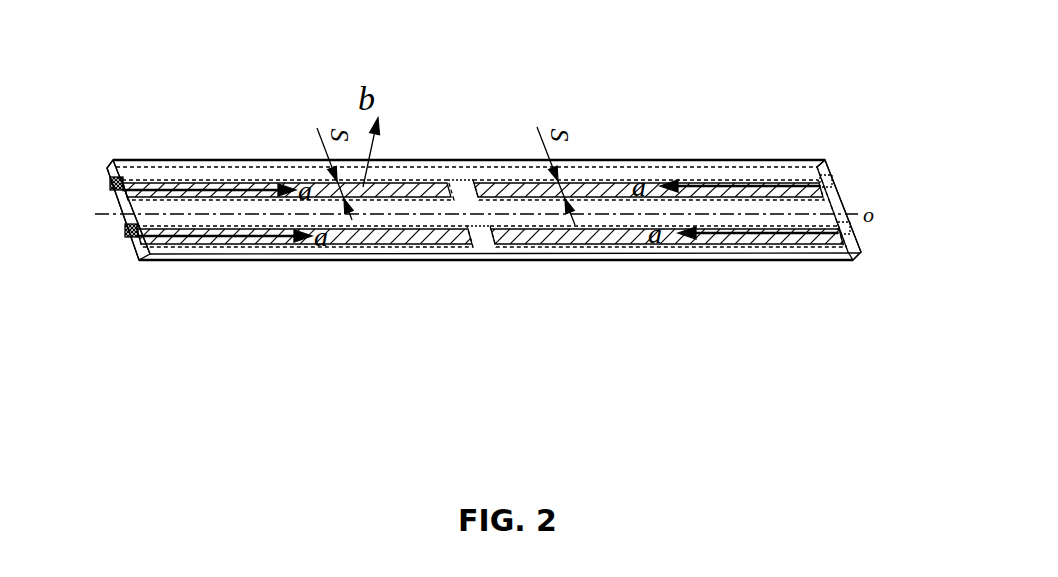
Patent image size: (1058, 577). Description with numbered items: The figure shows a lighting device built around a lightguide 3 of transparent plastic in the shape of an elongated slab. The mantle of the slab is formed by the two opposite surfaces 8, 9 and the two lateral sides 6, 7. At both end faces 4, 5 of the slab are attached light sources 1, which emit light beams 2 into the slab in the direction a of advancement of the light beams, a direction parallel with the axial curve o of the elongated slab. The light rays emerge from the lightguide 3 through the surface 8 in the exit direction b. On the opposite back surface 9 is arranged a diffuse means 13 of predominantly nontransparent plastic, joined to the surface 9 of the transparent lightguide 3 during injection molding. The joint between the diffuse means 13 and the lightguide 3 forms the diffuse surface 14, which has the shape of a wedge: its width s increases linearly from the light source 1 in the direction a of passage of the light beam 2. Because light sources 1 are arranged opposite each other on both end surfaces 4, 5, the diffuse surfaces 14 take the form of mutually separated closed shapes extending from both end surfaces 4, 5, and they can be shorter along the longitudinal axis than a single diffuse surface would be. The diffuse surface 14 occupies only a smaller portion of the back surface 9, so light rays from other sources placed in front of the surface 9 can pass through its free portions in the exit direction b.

The light source 1 is at (96, 165).
The light beam 2 is at (160, 181).
The lightguide 3 is at (590, 268).
The end face 4 is at (112, 212).
The end face 5 is at (853, 200).
The lateral side 6 is at (247, 155).
The lateral side 7 is at (346, 258).
The surface 8 is at (207, 167).
The opposite back surface 9 is at (259, 270).
The diffuse means 13 is at (112, 183).
The diffuse surface 14 is at (418, 190).